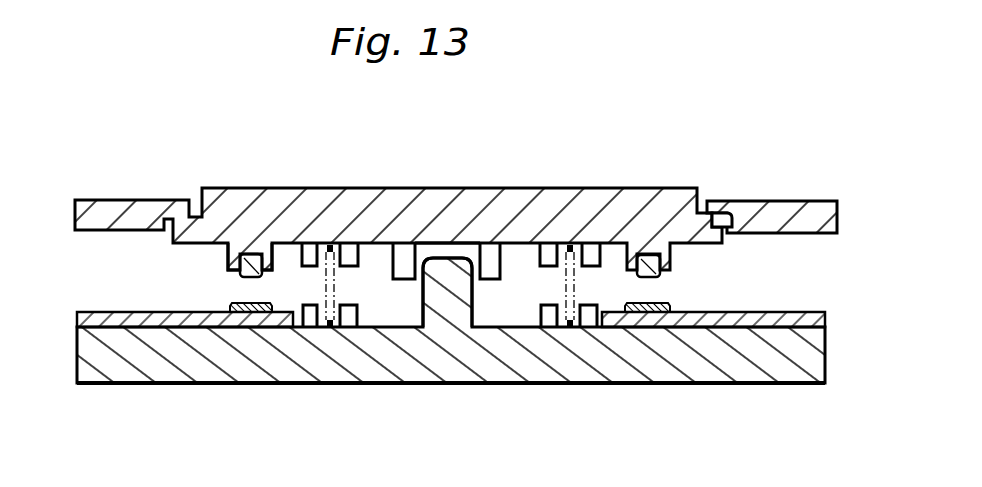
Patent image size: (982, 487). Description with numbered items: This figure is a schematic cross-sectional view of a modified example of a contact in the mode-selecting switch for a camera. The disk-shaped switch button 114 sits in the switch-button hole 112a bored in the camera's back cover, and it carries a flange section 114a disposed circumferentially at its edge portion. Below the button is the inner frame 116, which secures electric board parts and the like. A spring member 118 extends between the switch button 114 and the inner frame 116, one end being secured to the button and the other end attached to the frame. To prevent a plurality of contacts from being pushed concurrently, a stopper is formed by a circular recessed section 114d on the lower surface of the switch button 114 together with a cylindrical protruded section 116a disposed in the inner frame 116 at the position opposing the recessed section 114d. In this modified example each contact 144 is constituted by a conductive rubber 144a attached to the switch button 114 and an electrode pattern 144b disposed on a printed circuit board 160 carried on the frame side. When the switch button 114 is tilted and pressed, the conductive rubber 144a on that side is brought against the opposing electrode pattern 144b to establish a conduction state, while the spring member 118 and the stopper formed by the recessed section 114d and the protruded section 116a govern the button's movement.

The switch button 114 is at (568, 242).
The flange section 114a is at (740, 203).
The recessed section 114d is at (446, 243).
The switch-button hole 112a is at (703, 212).
The inner frame 116 is at (452, 390).
The protruded section 116a is at (433, 297).
The spring member 118 is at (331, 245).
The contact 144 is at (237, 288).
The conductive rubber 144a is at (262, 283).
The electrode pattern 144b is at (253, 312).
The printed circuit board 160 is at (117, 317).